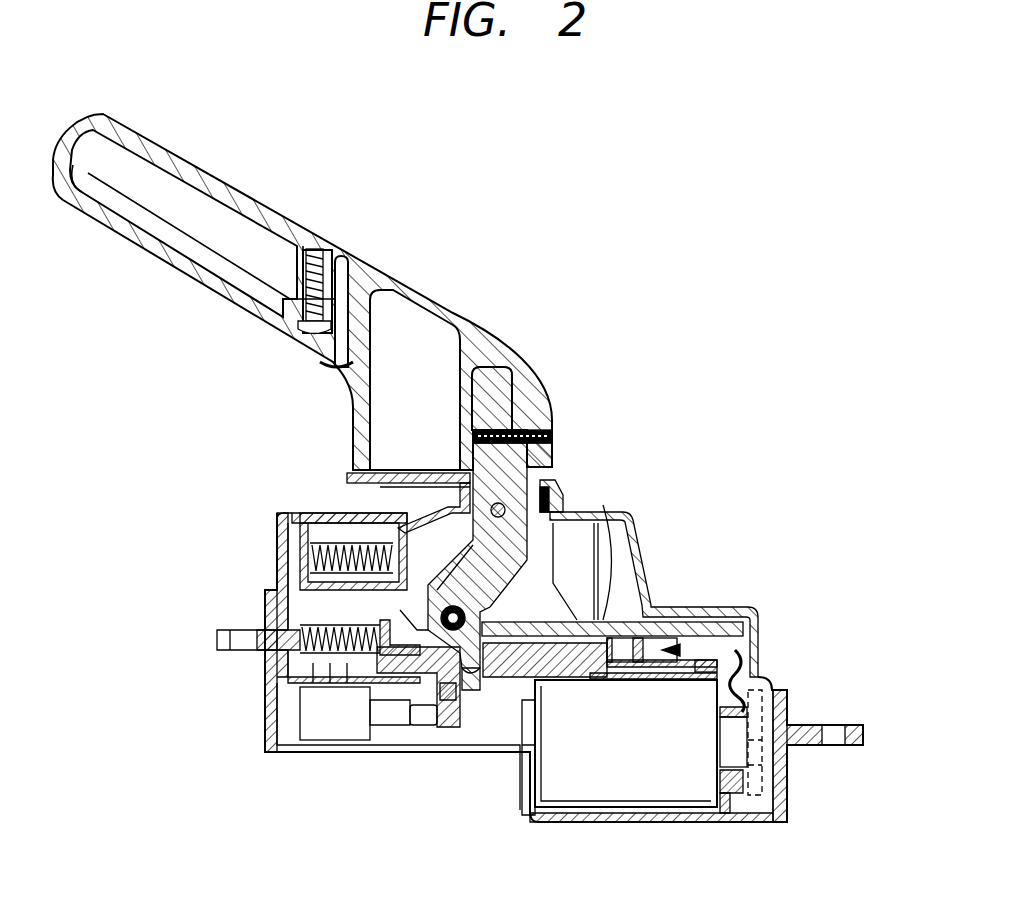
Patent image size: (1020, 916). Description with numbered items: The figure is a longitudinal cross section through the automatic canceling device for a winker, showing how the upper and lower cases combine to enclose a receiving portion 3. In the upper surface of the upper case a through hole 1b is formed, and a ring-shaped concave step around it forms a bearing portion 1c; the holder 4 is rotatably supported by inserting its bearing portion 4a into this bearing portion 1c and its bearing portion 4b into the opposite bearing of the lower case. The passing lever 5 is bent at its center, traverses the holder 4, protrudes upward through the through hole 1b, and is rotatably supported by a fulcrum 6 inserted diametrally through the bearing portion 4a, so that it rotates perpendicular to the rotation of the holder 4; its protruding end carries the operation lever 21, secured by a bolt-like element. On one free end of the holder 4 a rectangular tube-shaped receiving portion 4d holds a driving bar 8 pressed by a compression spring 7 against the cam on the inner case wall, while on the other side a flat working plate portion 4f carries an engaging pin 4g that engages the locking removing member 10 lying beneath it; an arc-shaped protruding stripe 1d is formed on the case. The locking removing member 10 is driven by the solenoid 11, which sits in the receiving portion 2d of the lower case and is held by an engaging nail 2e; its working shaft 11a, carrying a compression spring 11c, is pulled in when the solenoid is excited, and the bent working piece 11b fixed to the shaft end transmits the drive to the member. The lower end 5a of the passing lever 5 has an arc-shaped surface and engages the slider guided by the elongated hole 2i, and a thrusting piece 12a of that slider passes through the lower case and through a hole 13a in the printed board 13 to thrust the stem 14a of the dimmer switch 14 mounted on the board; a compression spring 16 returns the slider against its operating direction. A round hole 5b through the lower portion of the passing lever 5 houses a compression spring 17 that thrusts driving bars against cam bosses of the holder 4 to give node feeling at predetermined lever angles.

The through hole 1b is at (556, 463).
The bearing portion 1c is at (562, 492).
The arc-shaped protruding stripe 1d is at (688, 607).
The receiving portion 2d is at (740, 675).
The engaging nail 2e is at (722, 815).
The elongated hole 2i is at (283, 663).
The receiving portion 3 is at (630, 518).
The holder 4 is at (392, 508).
The bearing portion 4a is at (440, 474).
The bearing portion 4b is at (528, 702).
The receiving portion 4d is at (340, 512).
The working plate portion 4f is at (663, 621).
The engaging pin 4g is at (604, 505).
The passing lever 5 is at (523, 367).
The lower end 5a is at (478, 692).
The round hole 5b is at (443, 598).
The fulcrum 6 is at (503, 503).
The compression spring 7 is at (290, 527).
The driving bar 8 is at (305, 562).
The locking removing member 10 is at (717, 655).
The solenoid 11 is at (622, 812).
The working shaft 11a is at (733, 730).
The working piece 11b is at (740, 650).
The compression spring 11c is at (735, 795).
The thrusting piece 12a is at (450, 730).
The printed board 13 is at (273, 698).
The hole 13a is at (400, 690).
The dimmer switch 14 is at (322, 735).
The stem 14a is at (425, 727).
The compression spring 16 is at (300, 618).
The compression spring 17 is at (467, 613).
The operation lever 21 is at (347, 260).